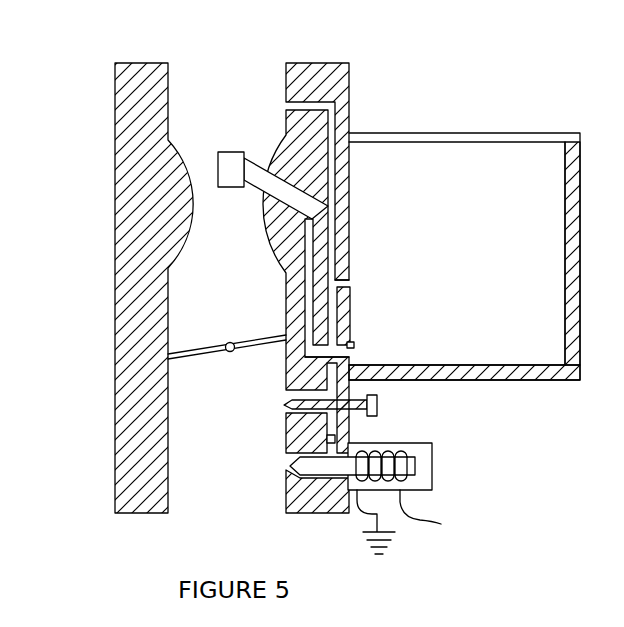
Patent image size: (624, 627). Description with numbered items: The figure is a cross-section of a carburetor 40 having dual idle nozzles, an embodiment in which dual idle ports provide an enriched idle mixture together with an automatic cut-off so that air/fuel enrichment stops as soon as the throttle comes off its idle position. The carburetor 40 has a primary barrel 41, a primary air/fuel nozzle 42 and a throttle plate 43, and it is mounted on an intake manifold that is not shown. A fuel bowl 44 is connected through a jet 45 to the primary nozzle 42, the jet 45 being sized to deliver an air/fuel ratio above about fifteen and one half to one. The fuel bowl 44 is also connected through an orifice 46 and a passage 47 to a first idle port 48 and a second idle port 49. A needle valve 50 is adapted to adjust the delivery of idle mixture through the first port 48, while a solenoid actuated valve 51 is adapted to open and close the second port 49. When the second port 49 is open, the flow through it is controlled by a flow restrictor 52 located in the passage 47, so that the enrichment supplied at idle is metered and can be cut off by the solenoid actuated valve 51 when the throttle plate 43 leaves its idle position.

The carburetor 40 is at (102, 88).
The primary barrel 41 is at (206, 57).
The primary air/fuel nozzle 42 is at (222, 152).
The throttle plate 43 is at (215, 347).
The fuel bowl 44 is at (464, 256).
The jet 45 is at (352, 350).
The orifice 46 is at (353, 285).
The passage 47 is at (352, 316).
The first idle port 48 is at (287, 404).
The second idle port 49 is at (288, 465).
The needle valve 50 is at (378, 403).
The solenoid actuated valve 51 is at (433, 462).
The flow restrictor 52 is at (325, 442).